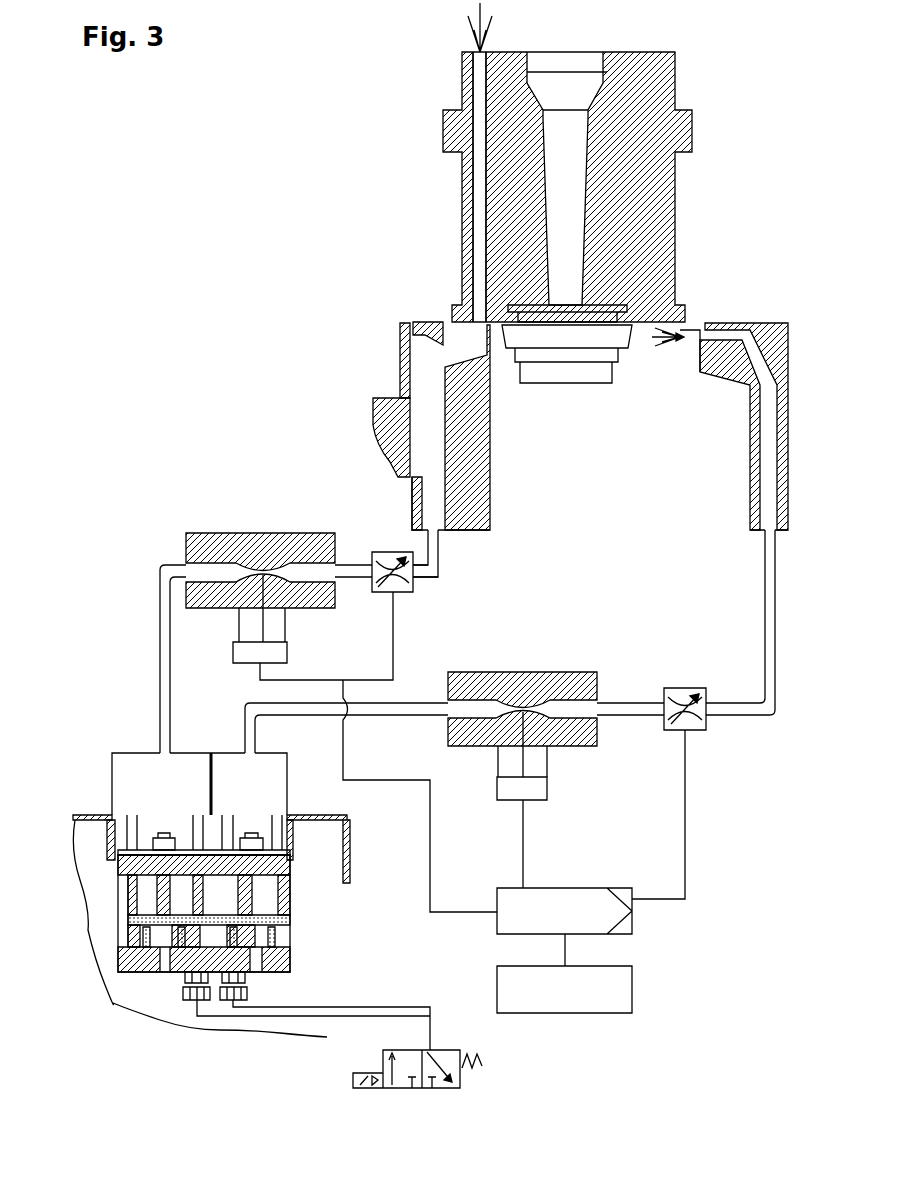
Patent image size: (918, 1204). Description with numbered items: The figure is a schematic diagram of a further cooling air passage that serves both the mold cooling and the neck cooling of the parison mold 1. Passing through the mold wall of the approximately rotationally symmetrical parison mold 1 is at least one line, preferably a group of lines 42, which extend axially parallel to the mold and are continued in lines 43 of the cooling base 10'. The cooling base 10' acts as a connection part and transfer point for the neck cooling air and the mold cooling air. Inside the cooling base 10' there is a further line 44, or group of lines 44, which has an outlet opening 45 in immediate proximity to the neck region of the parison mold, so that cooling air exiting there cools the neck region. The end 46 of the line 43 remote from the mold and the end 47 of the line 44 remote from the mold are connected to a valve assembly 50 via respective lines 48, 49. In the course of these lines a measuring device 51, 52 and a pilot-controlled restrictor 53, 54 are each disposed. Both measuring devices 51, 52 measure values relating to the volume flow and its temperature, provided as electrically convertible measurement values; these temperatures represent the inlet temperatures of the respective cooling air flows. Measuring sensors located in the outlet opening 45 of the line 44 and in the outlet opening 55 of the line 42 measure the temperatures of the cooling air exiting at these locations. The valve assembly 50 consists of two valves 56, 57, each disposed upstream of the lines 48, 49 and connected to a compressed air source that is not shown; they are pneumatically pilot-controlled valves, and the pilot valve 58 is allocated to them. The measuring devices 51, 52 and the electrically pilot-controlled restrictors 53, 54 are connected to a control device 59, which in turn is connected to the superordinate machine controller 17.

The parison mold 1 is at (462, 232).
The lines 42 is at (488, 181).
The outlet opening 55 is at (478, 50).
The outlet opening 45 is at (700, 330).
The lines 43 is at (425, 365).
The cooling base 10' is at (376, 438).
The end 46 is at (432, 527).
The line 44 is at (757, 447).
The end 47 is at (762, 522).
The line 49 is at (770, 580).
The measuring device 51 is at (262, 548).
The line 48 is at (437, 552).
The pilot-controlled restrictor 53 is at (402, 592).
The measuring device 52 is at (522, 685).
The pilot-controlled restrictor 54 is at (680, 690).
The valve assembly 50 is at (120, 742).
The valve 57 is at (280, 945).
The valve 56 is at (128, 972).
The pilot valve 58 is at (455, 1070).
The control device 59 is at (633, 925).
The machine controller 17 is at (633, 986).